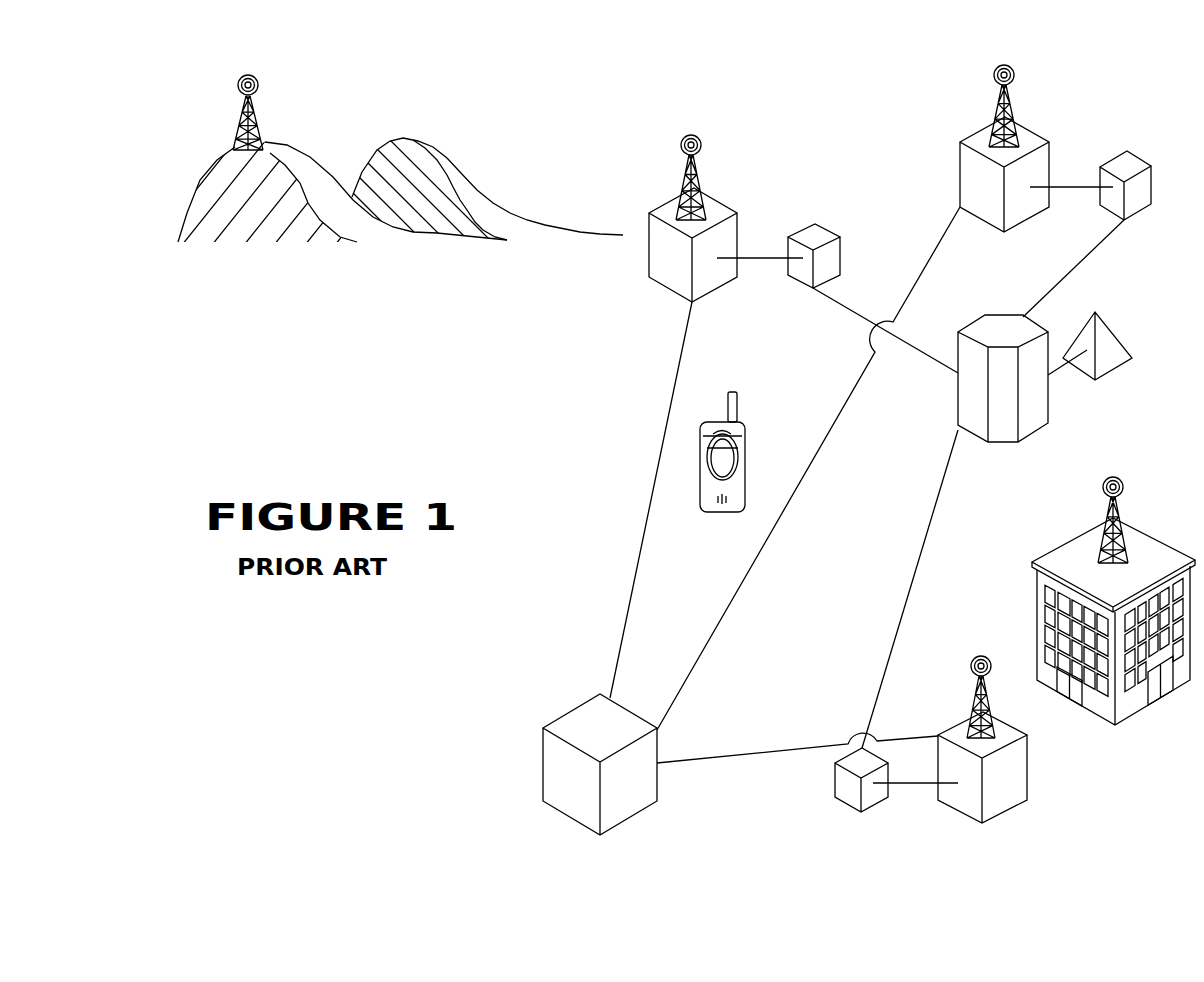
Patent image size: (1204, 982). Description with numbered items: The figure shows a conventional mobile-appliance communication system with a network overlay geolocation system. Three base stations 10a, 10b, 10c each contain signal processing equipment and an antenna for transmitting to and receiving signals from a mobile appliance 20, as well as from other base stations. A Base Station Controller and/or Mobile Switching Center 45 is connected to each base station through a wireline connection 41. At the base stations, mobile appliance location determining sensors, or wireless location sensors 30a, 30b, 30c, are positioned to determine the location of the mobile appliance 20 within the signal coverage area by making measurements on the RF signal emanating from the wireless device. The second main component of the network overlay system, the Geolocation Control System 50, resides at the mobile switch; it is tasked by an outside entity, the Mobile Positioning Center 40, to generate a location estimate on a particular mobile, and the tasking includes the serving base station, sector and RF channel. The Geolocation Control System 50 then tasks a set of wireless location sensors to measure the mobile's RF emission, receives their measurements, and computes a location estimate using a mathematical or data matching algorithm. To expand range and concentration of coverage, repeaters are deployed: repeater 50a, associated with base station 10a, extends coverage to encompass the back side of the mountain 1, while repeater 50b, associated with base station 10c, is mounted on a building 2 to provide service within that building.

The mountain 1 is at (200, 178).
The building 2 is at (1157, 712).
The base station 10a is at (682, 219).
The base station 10b is at (996, 148).
The base station 10c is at (995, 744).
The mobile appliance 20 is at (745, 437).
The wireless location sensor 30a is at (813, 222).
The wireless location sensor 30b is at (1123, 150).
The wireless location sensor 30c is at (861, 815).
The Mobile Positioning Center 40 is at (1102, 318).
The wireline connection 41 is at (785, 493).
The Mobile Switching Center 45 is at (595, 697).
The Geolocation Control System 50 is at (1003, 313).
The repeater 50a is at (267, 125).
The repeater 50b is at (1148, 522).